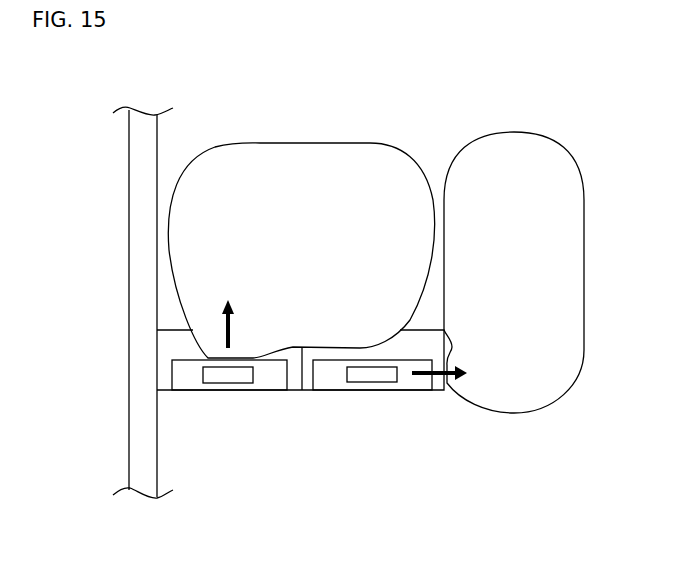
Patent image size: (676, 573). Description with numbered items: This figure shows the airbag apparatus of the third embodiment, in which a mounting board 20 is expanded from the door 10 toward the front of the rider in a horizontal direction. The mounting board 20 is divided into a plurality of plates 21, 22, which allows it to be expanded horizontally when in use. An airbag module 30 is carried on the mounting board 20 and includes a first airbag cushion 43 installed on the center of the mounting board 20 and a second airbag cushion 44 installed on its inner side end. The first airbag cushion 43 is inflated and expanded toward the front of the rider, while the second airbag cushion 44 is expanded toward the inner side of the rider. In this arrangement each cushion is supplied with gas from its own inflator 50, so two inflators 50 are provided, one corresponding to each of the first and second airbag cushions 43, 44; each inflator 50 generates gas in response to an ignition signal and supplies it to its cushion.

The door 10 is at (140, 289).
The mounting board 20 is at (300, 434).
The plate 21 is at (268, 385).
The plate 22 is at (332, 385).
The airbag module 30 is at (335, 357).
The first airbag cushion 43 is at (340, 143).
The second airbag cushion 44 is at (513, 132).
The inflator 50 is at (222, 377).